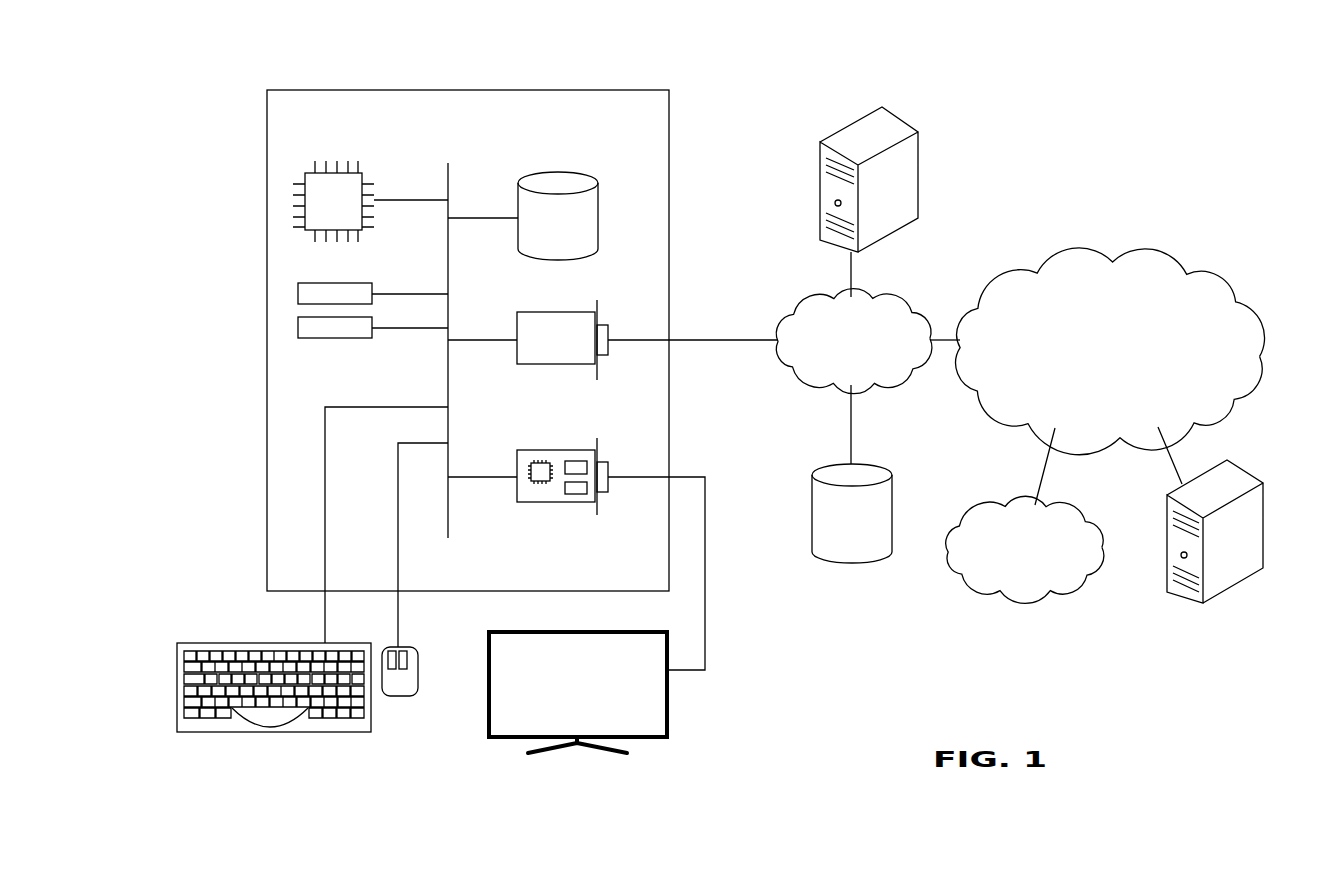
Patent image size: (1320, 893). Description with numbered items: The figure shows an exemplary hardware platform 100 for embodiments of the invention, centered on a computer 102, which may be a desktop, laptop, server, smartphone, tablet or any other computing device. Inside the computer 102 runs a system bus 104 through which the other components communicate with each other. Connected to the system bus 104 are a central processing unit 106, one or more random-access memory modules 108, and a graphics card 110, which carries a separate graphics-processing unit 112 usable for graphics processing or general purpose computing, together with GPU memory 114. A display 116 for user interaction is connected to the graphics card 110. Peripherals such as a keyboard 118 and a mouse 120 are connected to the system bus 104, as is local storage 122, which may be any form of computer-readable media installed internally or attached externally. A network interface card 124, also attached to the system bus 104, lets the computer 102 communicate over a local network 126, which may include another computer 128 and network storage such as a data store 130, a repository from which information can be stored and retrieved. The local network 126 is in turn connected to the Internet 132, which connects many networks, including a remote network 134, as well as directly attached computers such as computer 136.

The system 100 is at (1195, 92).
The computer 102 is at (625, 90).
The system bus 104 is at (449, 172).
The central processing unit (CPU) 106 is at (356, 172).
The random-access memory (RAM) modules 108 is at (373, 326).
The graphics card 110 is at (516, 460).
The graphics-processing unit (GPU) 112 is at (540, 482).
The GPU memory 114 is at (575, 495).
The display 116 is at (669, 720).
The keyboard 118 is at (277, 733).
The mouse 120 is at (398, 697).
The local storage 122 is at (600, 203).
The network interface card (NIC) 124 is at (516, 322).
The local network 126 is at (905, 296).
The computer 128 is at (907, 118).
The data store 130 is at (886, 463).
The Internet 132 is at (1152, 262).
The remote network 134 is at (1078, 505).
The computer 136 is at (1240, 470).